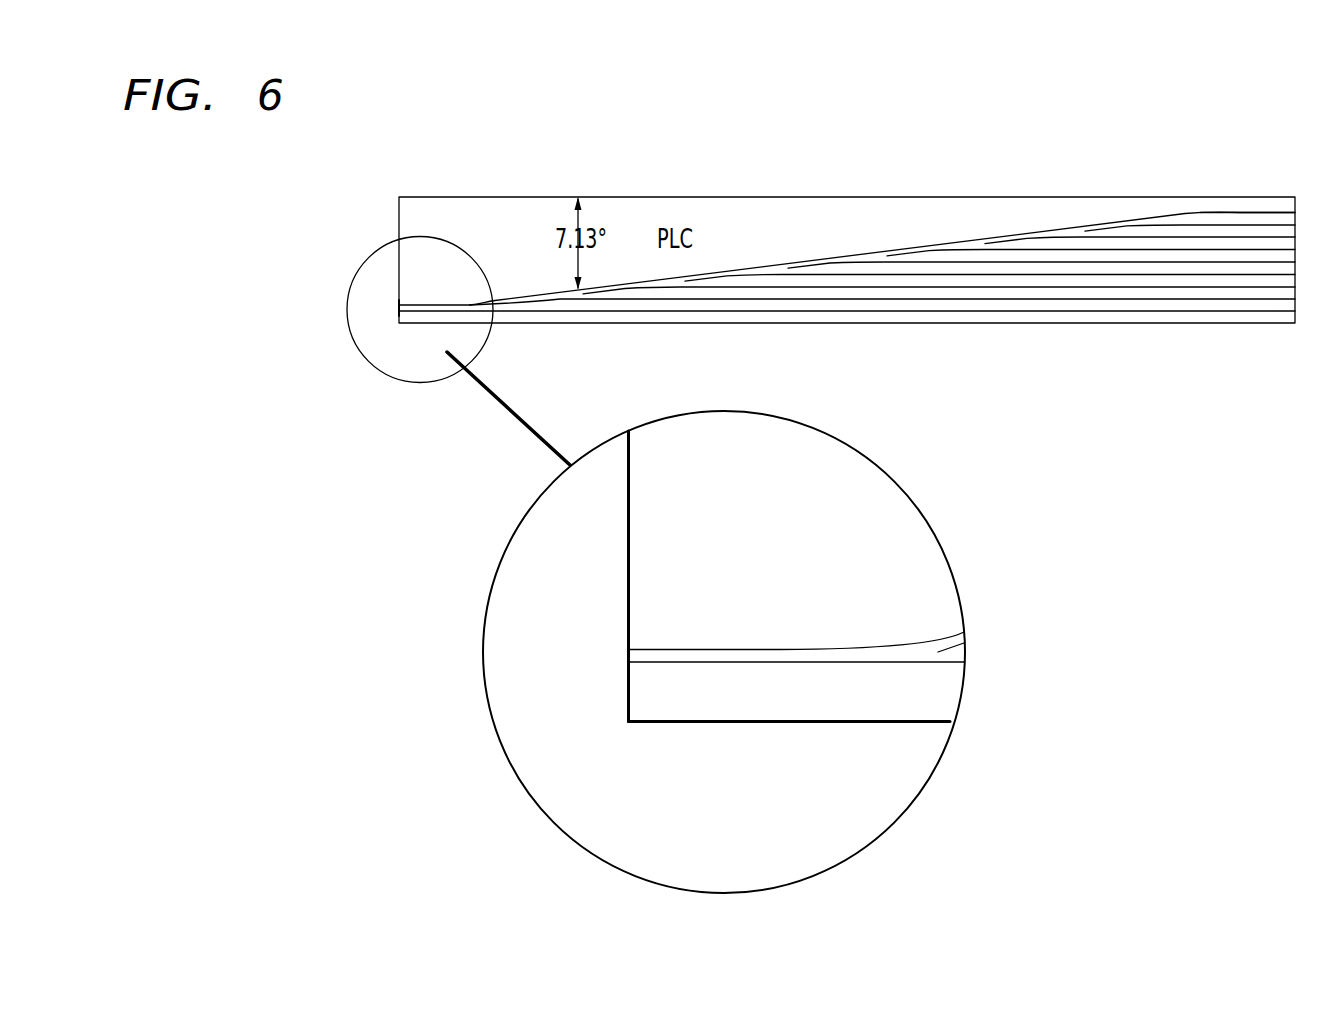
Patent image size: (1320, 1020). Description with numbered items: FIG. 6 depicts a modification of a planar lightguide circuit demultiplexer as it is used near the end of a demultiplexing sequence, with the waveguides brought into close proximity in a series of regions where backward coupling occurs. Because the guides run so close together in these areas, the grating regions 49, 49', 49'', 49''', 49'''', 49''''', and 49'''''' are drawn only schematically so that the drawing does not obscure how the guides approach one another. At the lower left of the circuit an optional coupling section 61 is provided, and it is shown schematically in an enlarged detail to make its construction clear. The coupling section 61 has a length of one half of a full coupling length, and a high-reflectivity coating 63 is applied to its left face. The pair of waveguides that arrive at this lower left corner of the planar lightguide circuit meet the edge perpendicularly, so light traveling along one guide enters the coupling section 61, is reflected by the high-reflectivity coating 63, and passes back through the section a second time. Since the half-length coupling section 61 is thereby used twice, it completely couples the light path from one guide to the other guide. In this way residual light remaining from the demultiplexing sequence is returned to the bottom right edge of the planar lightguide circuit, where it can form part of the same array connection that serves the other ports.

The grating region 49 is at (1174, 165).
The grating region 49' is at (1122, 170).
The grating region 49'' is at (1071, 175).
The grating region 49''' is at (1034, 182).
The grating region 49'''' is at (985, 188).
The grating region 49''''' is at (941, 193).
The grating region 49'''''' is at (894, 200).
The coupling section 61 is at (735, 662).
The high-reflectivity coating 63 is at (399, 309).